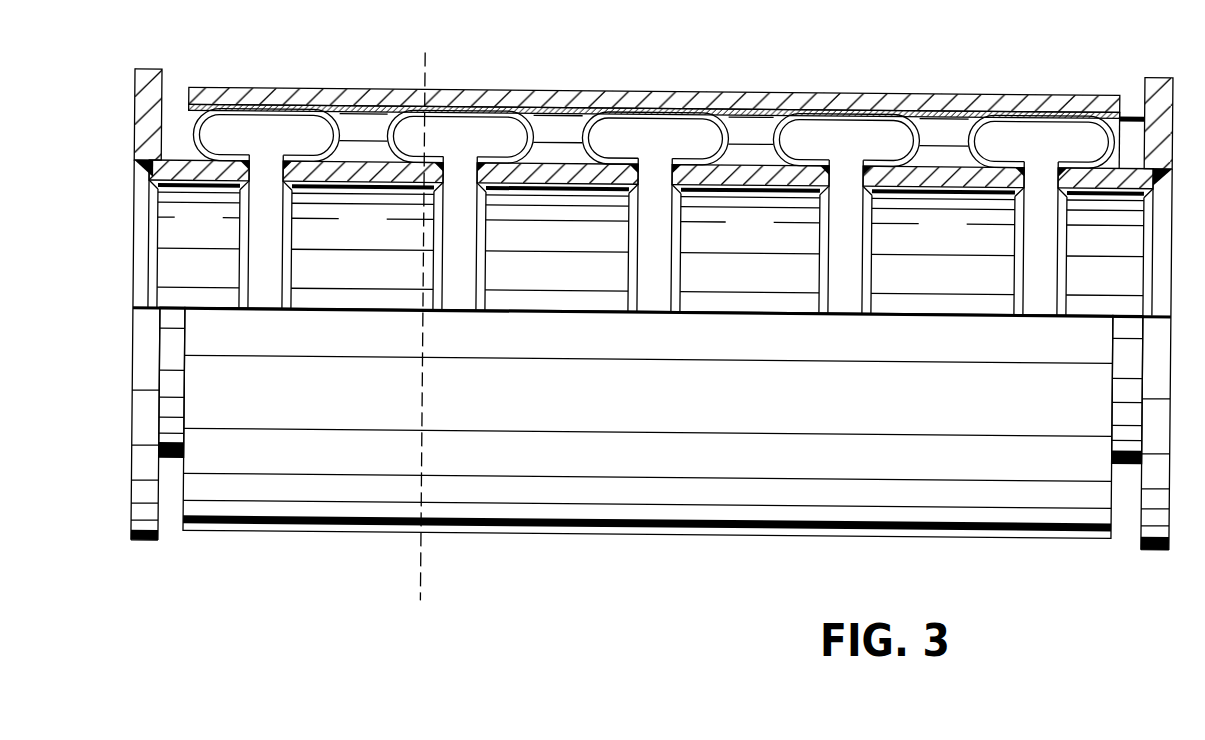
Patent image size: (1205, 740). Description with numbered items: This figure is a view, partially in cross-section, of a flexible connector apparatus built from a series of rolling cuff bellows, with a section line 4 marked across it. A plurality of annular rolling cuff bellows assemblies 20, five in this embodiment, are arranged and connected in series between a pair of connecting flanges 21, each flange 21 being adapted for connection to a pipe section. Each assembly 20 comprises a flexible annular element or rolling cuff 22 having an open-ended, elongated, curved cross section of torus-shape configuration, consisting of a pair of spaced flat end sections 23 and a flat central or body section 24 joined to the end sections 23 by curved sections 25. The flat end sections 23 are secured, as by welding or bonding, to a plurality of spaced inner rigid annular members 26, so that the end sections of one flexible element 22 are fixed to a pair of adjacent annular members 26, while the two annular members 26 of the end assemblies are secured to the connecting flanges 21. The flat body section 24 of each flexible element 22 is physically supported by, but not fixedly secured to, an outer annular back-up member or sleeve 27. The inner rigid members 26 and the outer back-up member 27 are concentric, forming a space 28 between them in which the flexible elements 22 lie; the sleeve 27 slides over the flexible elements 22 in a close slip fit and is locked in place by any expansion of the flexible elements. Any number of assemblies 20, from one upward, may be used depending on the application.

The section line 4- 4 is at (411, 61).
The rolling cuff bellows assembly 20 is at (262, 70).
The connecting flange 21 is at (148, 69).
The flexible annular element 22 is at (351, 119).
The flat end section 23 is at (278, 152).
The flat central body section 24 is at (290, 110).
The curved section 25 is at (214, 118).
The inner rigid annular member 26 is at (185, 236).
The outer annular back-up member 27 is at (738, 85).
The space 28 is at (563, 111).